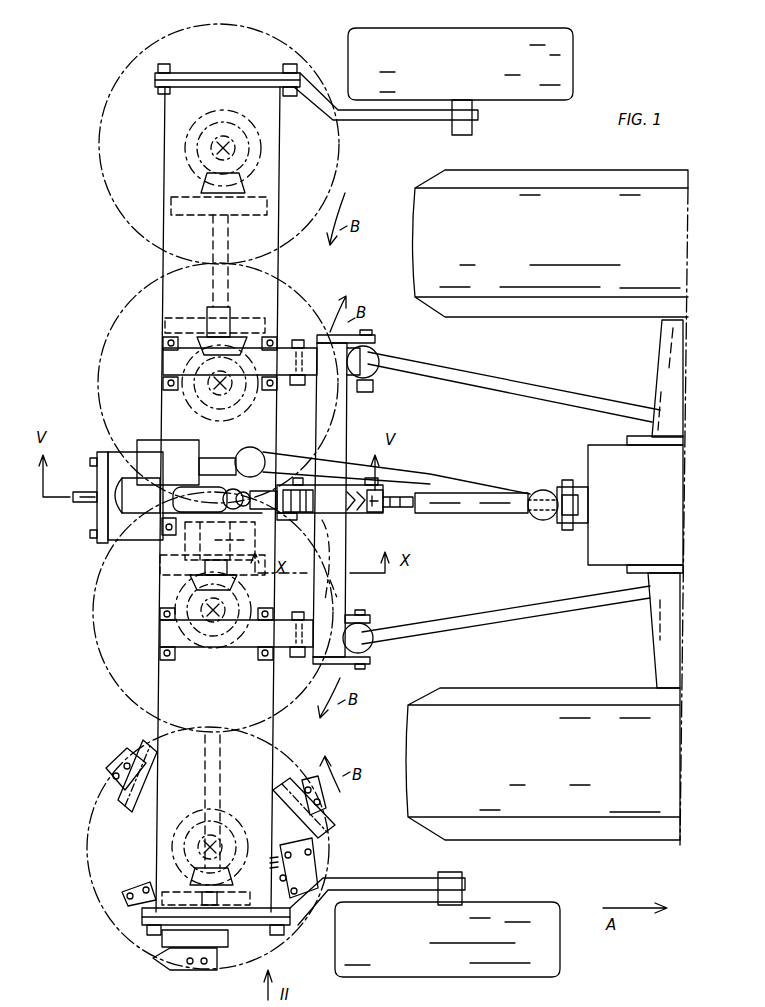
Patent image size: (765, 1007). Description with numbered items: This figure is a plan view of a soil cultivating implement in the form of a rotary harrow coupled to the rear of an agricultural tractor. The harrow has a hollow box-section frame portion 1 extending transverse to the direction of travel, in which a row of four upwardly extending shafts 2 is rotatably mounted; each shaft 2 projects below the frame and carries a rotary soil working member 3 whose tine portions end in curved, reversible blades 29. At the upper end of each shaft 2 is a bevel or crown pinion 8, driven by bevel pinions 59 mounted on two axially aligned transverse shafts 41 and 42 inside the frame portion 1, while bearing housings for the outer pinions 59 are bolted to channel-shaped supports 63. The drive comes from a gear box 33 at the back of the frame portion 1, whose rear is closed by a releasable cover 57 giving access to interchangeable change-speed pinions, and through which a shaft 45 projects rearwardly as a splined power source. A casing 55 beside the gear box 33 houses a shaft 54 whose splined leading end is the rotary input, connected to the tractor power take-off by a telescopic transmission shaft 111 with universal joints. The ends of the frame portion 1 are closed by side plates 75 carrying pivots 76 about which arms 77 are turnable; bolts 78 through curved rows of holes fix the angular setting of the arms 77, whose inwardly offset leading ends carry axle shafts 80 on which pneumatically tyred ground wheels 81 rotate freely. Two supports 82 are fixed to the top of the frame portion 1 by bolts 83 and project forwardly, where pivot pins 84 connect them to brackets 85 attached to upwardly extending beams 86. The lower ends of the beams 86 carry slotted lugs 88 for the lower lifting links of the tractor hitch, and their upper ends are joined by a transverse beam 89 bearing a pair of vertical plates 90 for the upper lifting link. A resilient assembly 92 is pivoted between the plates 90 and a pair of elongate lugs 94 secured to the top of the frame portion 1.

The hollow box-section frame portion 1 is at (165, 147).
The shaft 2 is at (250, 148).
The rotary soil working member 3 is at (138, 258).
The bevel or crown pinion 8 is at (262, 162).
The blade 29 is at (108, 770).
The gear box 33 is at (132, 540).
The shaft 41 is at (230, 298).
The shaft 42 is at (226, 776).
The shaft 45 is at (80, 504).
The shaft 54 is at (199, 462).
The casing 55 is at (150, 440).
The cover 57 is at (97, 545).
The bevel pinion 59 is at (250, 188).
The support 63 is at (171, 210).
The side plate 75 is at (160, 88).
The pivot 76 is at (164, 64).
The arm 77 is at (382, 120).
The bolt 78 is at (288, 64).
The axle shaft 80 is at (473, 112).
The pneumatically tyred ground wheel 81 is at (578, 108).
The support 82 is at (165, 346).
The bolt 83 is at (163, 383).
The pivot pin 84 is at (298, 340).
The bracket 85 is at (305, 386).
The beam 86 is at (347, 588).
The lug 88 is at (385, 350).
The beam 89 is at (338, 514).
The plate 90 is at (400, 472).
The resilient assembly 92 is at (190, 492).
The elongate lug 94 is at (160, 500).
The telescopic transmission shaft 111 is at (445, 478).